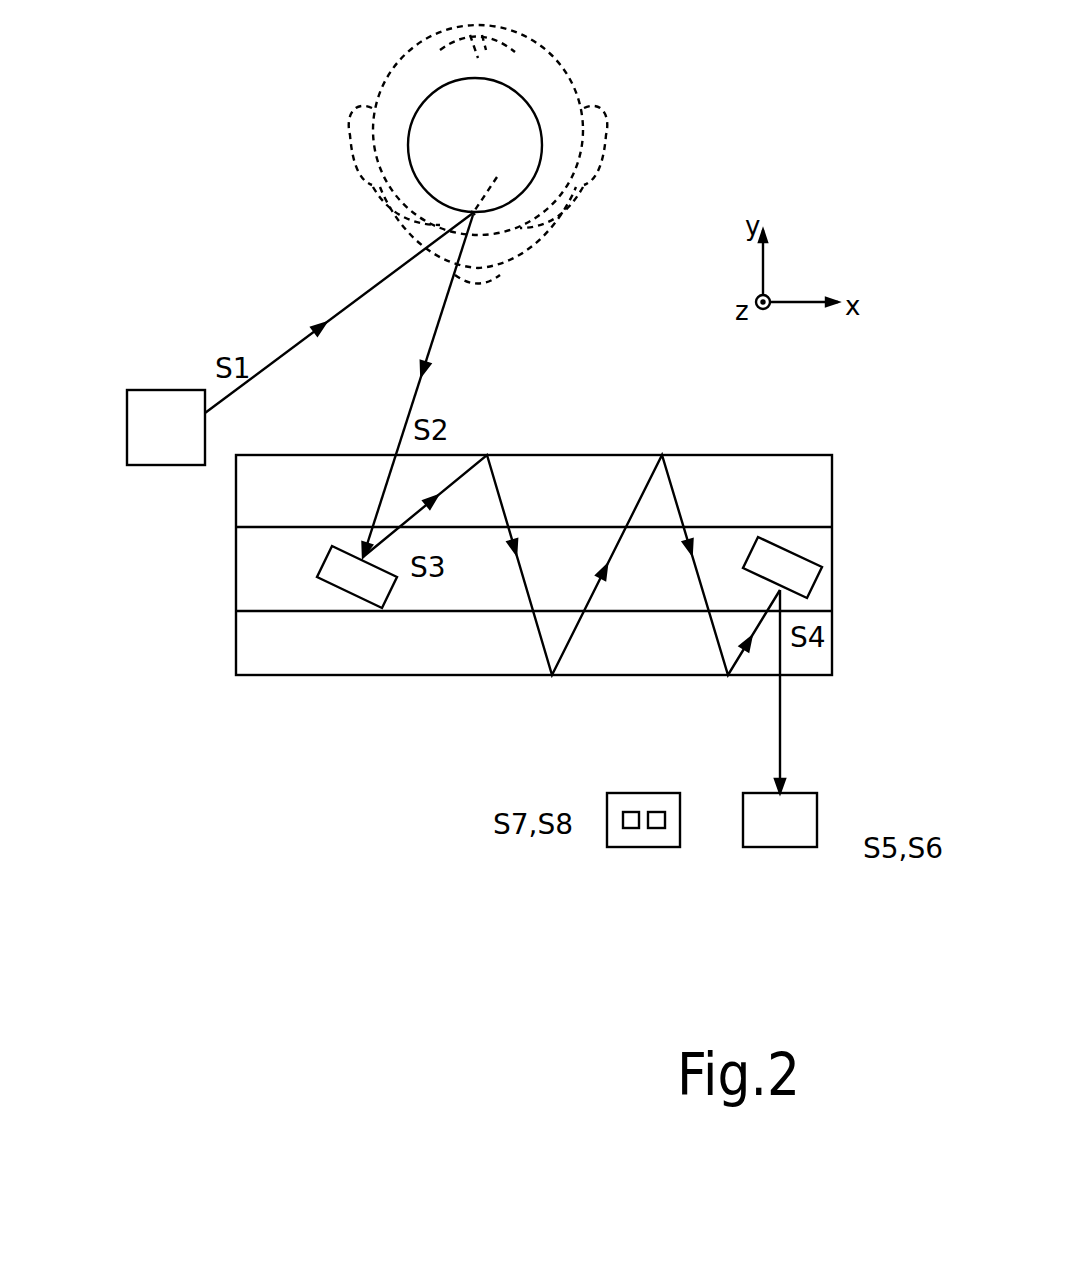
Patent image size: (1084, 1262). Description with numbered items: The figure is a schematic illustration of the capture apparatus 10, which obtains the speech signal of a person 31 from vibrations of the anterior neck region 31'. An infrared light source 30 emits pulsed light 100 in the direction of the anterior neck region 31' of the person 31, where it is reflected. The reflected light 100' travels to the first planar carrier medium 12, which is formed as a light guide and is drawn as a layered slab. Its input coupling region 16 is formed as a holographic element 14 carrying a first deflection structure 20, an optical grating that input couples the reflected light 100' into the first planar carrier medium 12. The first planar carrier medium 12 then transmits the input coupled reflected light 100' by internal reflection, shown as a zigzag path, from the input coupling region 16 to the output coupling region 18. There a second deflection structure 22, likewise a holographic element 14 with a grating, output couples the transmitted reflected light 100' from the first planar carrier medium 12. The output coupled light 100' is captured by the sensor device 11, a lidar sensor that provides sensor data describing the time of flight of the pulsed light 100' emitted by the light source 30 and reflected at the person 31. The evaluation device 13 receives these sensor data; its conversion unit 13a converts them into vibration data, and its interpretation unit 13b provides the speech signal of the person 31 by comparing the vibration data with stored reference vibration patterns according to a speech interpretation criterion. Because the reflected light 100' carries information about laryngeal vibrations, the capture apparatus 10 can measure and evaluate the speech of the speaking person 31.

The person 31 is at (497, 146).
The anterior neck region 31' is at (549, 248).
The pulsed light 100 is at (339, 313).
The reflected light 100' is at (438, 386).
The light source 30 is at (158, 430).
The capture apparatus 10 is at (197, 495).
The first planar carrier medium 12 is at (557, 483).
The input coupling region 16 is at (323, 527).
The holographic element 14 is at (275, 575).
The first deflection structure 20 is at (357, 608).
The second deflection structure 22 is at (822, 537).
The output coupling region 18 is at (777, 610).
The sensor device 11 is at (797, 827).
The evaluation device 13 is at (647, 803).
The conversion unit 13a is at (632, 829).
The interpretation unit 13b is at (658, 829).